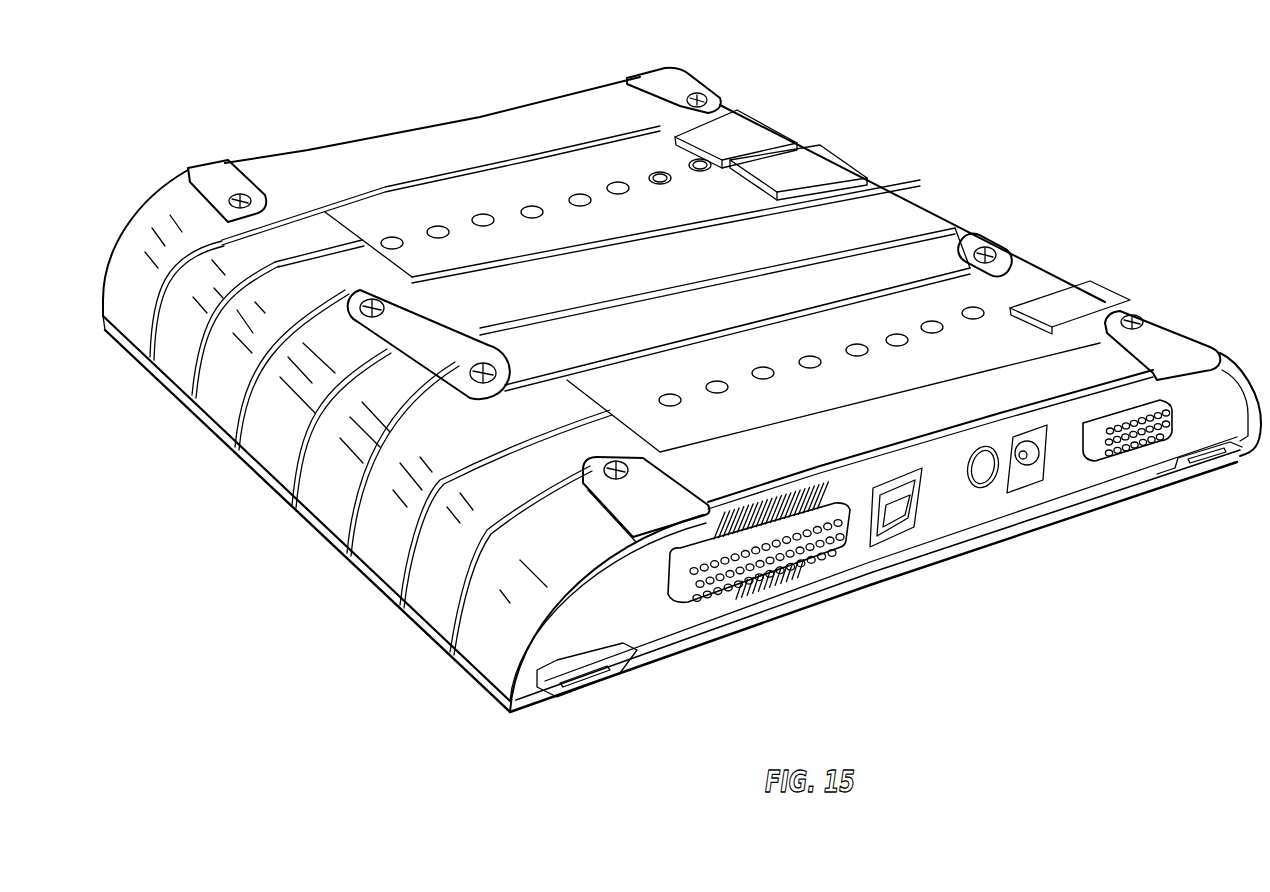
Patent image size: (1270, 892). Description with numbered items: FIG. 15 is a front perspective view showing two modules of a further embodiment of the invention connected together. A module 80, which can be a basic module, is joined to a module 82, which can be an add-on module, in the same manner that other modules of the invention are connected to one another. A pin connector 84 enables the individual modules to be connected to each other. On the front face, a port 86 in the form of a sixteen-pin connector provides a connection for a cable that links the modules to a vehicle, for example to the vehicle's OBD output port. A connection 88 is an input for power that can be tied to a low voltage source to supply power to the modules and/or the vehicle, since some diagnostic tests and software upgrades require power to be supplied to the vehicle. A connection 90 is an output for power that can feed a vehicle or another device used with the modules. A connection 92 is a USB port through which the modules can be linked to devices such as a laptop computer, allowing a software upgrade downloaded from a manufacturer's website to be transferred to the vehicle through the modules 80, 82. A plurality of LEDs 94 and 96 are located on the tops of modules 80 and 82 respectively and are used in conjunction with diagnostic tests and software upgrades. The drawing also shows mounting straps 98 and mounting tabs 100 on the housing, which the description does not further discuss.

The module 80 is at (762, 140).
The module 82 is at (1087, 303).
The pin connector 84 is at (720, 597).
The port 86 is at (1147, 447).
The connection 88 is at (1030, 470).
The connection 90 is at (983, 487).
The USB port 92 is at (897, 523).
The LEDs 94 is at (617, 187).
The LEDs 96 is at (940, 320).
The mounting strap 98 is at (667, 86).
The mounting tab 100 is at (897, 206).